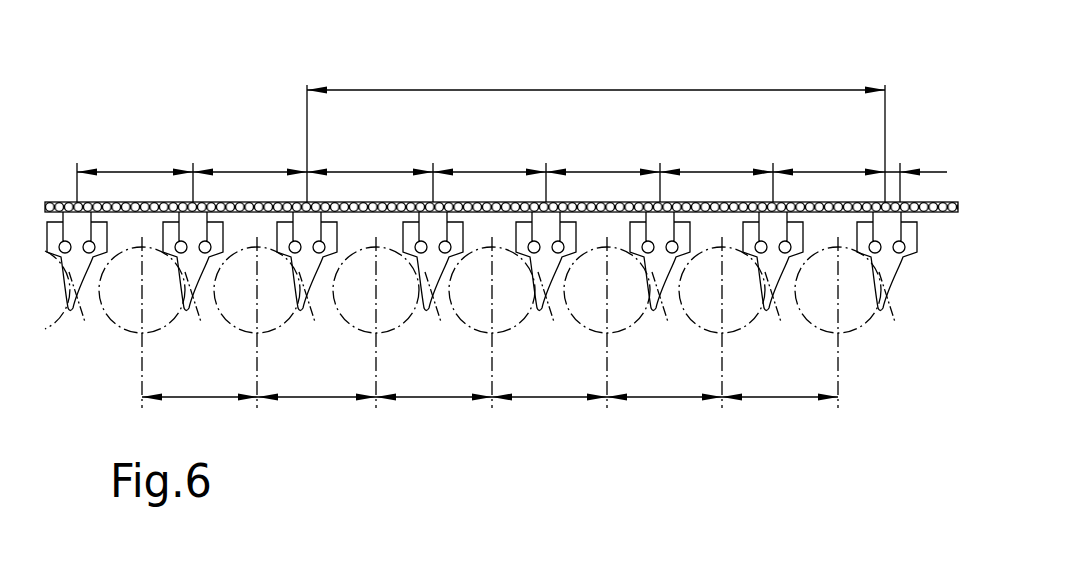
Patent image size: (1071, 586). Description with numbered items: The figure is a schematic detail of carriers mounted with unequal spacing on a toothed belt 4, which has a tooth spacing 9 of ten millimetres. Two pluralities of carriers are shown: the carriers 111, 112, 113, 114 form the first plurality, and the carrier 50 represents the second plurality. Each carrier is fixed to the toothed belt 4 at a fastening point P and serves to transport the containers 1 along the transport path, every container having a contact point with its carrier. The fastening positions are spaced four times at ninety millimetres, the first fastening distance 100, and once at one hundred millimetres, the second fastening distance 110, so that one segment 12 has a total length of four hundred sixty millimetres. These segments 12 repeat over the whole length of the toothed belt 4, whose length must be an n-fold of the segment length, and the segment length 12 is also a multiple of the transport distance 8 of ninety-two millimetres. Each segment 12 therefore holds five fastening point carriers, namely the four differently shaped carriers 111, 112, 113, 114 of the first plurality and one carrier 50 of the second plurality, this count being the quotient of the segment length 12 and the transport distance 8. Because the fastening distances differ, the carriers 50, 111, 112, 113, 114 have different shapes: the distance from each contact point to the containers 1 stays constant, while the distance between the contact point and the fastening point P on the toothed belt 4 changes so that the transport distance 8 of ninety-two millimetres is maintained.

The container 1 is at (858, 324).
The toothed belt 4 is at (934, 212).
The transport distance 8 is at (780, 399).
The tooth spacing 9 is at (930, 138).
The segment 12 is at (627, 63).
The carrier of the second plurality of carriers 50 is at (433, 286).
The first fastening distance 100 is at (812, 146).
The second fastening distance 110 is at (391, 149).
The carrier of the first plurality of carriers 111 is at (597, 286).
The carrier of the first plurality of carriers 112 is at (483, 286).
The carrier of the first plurality of carriers 113 is at (660, 286).
The carrier of the first plurality of carriers 114 is at (546, 286).
The fastening point P is at (660, 202).